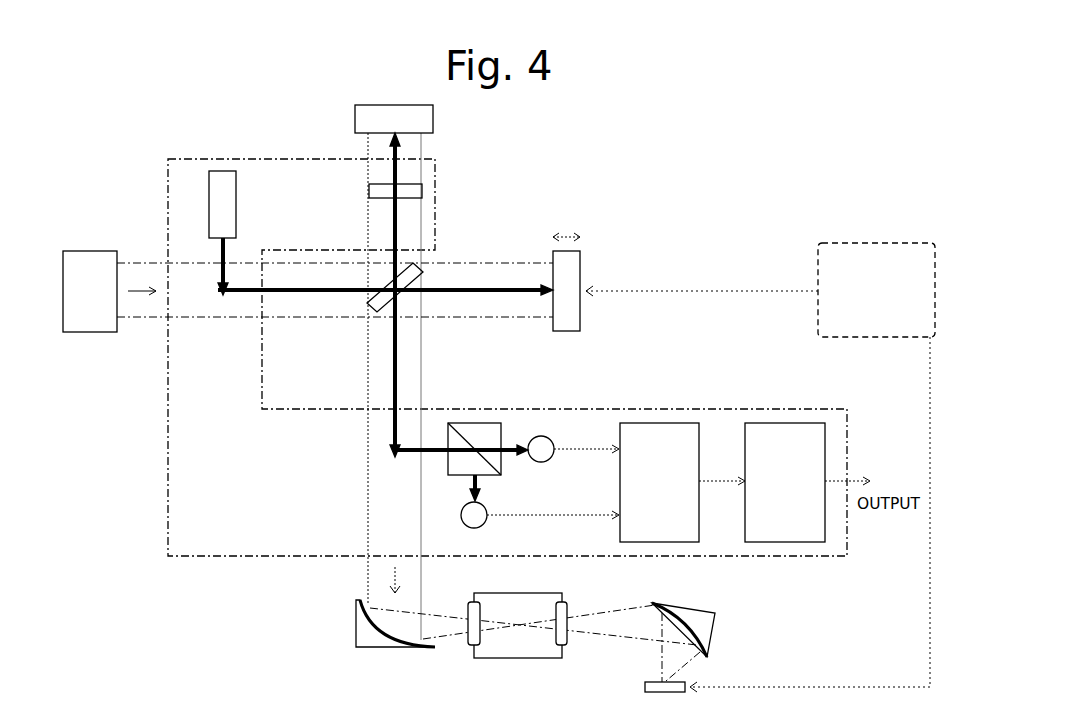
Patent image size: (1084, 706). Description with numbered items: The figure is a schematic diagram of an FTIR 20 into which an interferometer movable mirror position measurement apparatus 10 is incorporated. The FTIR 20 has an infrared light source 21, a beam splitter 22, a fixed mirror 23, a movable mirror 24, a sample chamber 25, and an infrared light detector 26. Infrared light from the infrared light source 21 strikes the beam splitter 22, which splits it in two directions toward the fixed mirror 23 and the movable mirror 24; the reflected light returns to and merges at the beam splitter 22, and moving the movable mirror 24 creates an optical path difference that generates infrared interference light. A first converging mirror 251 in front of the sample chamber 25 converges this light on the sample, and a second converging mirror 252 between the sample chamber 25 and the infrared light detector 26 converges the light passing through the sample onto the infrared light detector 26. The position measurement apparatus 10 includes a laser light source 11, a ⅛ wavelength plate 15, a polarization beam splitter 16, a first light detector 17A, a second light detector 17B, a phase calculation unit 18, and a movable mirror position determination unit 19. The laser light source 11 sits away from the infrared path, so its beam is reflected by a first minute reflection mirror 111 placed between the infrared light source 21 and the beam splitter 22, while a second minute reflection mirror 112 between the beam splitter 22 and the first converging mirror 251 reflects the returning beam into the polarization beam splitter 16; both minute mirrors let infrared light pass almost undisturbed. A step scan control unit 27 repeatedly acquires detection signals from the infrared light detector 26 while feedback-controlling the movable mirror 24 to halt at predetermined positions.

The interferometer movable mirror position measurement apparatus 10 is at (847, 556).
The laser light source 11 is at (223, 212).
The first minute reflection mirror 111 is at (217, 290).
The second minute reflection mirror 112 is at (392, 447).
The ⅛ wavelength plate 15 is at (422, 192).
The polarization beam splitter 16 is at (503, 420).
The first light detector 17A is at (478, 517).
The second light detector 17B is at (545, 436).
The phase calculation unit 18 is at (700, 420).
The movable mirror position determination unit 19 is at (828, 420).
The FTIR 20 is at (128, 608).
The infrared light source 21 is at (90, 305).
The beam splitter 22 is at (380, 306).
The fixed mirror 23 is at (422, 118).
The movable mirror 24 is at (565, 316).
The sample chamber 25 is at (562, 658).
The first converging mirror 251 is at (370, 632).
The second converging mirror 252 is at (698, 622).
The infrared light detector 26 is at (682, 680).
The step scan control unit 27 is at (818, 243).